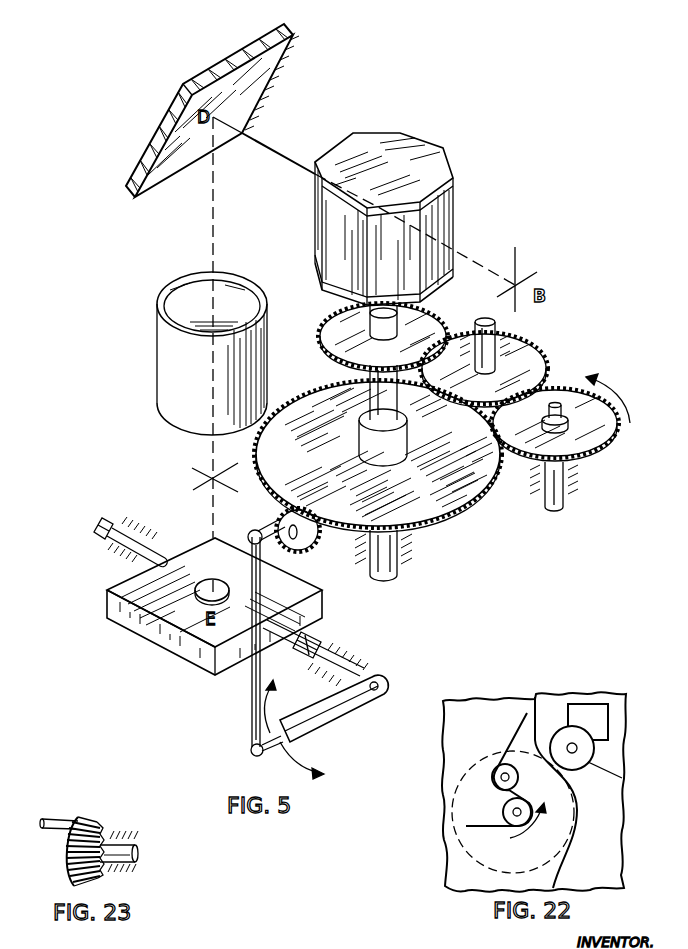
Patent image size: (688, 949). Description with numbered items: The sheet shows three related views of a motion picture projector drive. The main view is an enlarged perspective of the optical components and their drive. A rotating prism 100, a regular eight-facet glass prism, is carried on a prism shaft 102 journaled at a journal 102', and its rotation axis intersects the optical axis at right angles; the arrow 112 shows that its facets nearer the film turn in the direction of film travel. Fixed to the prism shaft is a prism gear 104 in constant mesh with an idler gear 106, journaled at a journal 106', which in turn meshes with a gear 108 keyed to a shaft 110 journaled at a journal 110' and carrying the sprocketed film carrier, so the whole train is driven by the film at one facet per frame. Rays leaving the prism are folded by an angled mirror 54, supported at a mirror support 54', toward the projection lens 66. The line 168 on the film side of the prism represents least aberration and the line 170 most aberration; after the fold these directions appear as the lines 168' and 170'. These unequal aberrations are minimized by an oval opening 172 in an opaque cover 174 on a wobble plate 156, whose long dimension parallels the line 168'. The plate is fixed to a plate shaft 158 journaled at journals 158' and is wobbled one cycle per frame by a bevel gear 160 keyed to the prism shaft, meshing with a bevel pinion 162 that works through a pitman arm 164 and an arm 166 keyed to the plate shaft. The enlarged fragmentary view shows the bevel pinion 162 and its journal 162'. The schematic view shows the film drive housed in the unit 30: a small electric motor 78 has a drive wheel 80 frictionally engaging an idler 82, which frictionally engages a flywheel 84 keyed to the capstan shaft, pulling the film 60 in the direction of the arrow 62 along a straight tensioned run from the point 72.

In FIG. 5, the angled mirror 54 is at (209, 110).
In FIG. 5, the mirror support 54' is at (283, 83).
In FIG. 5, the arrow of prism rotation 112 is at (457, 150).
In FIG. 5, the rotating prism 100 is at (455, 165).
In FIG. 5, the line of least aberration 168 is at (555, 279).
In FIG. 5, the line of most aberration 170 is at (542, 301).
In FIG. 5, the idler gear journal 106' is at (481, 330).
In FIG. 5, the idler gear 106 is at (507, 369).
In FIG. 5, the prism gear 104 is at (330, 322).
In FIG. 5, the projection lens 66 is at (158, 330).
In FIG. 5, the gear 108 is at (605, 451).
In FIG. 5, the shaft journal 110' is at (580, 485).
In FIG. 5, the shaft 110 is at (571, 502).
In FIG. 5, the bevel gear 160 is at (483, 505).
In FIG. 5, the line of least aberration beyond the mirror 168' is at (187, 469).
In FIG. 5, the line of most aberration beyond the mirror 170' is at (190, 483).
In FIG. 5, the plate shaft journal 158' is at (250, 596).
In FIG. 5, the bevel pinion 162 is at (315, 540).
In FIG. 23, the bevel pinion 162 is at (80, 831).
In FIG. 5, the prism shaft journal 102' is at (412, 557).
In FIG. 5, the prism shaft 102 is at (401, 573).
In FIG. 5, the oval opening 172 is at (202, 596).
In FIG. 5, the opaque cover 174 is at (140, 605).
In FIG. 5, the wobble plate 156 is at (180, 657).
In FIG. 5, the plate shaft 158 is at (313, 644).
In FIG. 5, the pitman arm 164 is at (251, 701).
In FIG. 5, the arm 166 is at (336, 717).
In FIG. 22, the unit 30 is at (446, 794).
In FIG. 22, the film 60 is at (511, 744).
In FIG. 22, the film run point 72 is at (527, 803).
In FIG. 22, the electric motor 78 is at (568, 710).
In FIG. 22, the drive wheel 80 is at (609, 735).
In FIG. 22, the idler 82 is at (616, 771).
In FIG. 22, the flywheel 84 is at (578, 814).
In FIG. 22, the arrow of film travel 62 is at (541, 830).
In FIG. 23, the bevel pinion journal 162' is at (134, 832).